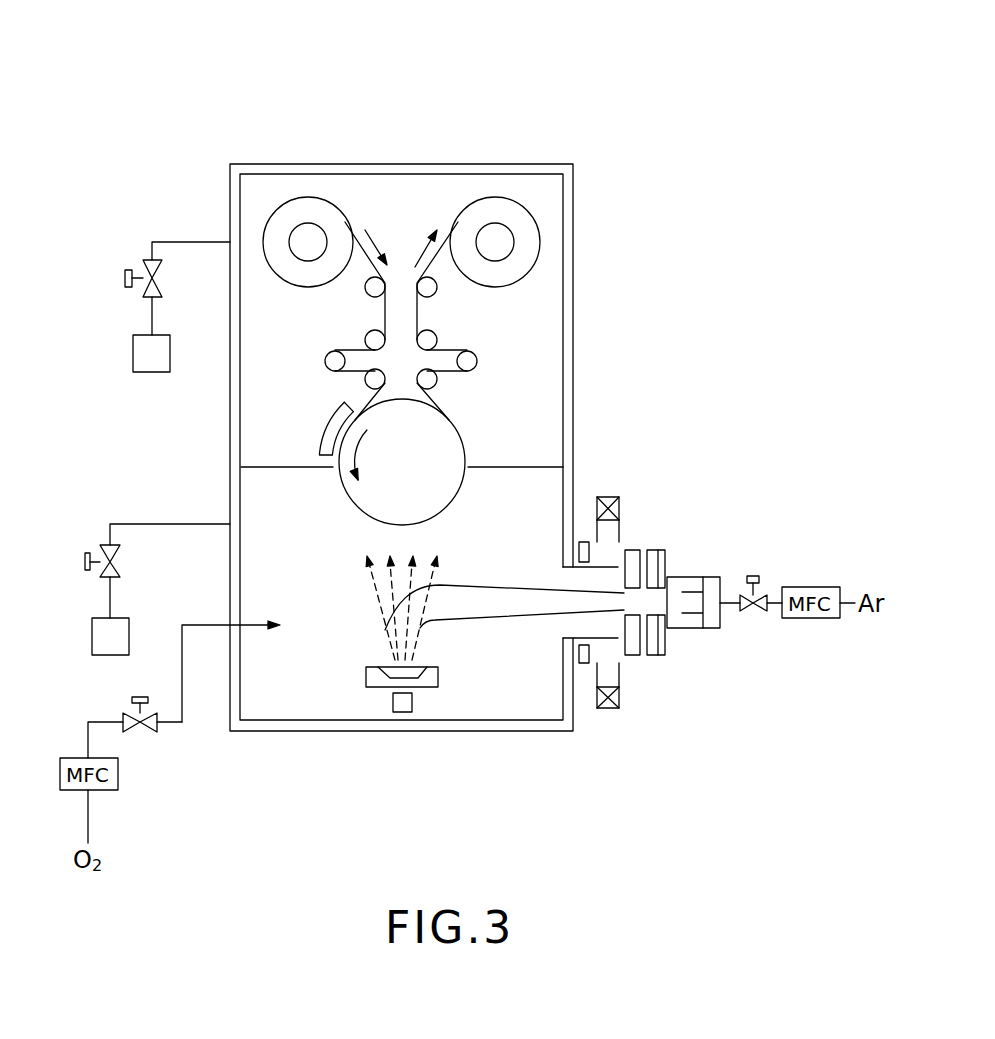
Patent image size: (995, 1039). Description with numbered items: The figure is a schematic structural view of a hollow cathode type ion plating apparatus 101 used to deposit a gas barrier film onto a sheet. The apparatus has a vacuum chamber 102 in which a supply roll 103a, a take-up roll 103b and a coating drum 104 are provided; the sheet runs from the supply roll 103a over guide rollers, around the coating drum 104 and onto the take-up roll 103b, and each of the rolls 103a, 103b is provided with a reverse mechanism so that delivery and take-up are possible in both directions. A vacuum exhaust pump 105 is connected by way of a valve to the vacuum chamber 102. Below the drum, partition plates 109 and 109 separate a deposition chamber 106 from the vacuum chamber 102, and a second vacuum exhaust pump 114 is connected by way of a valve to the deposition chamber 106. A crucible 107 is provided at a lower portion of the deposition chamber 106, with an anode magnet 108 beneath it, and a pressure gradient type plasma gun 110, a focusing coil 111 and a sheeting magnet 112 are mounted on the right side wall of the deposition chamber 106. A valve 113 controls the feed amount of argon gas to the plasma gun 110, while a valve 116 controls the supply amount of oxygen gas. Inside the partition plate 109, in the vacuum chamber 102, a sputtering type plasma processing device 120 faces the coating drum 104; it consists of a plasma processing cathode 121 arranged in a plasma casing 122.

The hollow cathode type ion plating apparatus 101 is at (487, 130).
The vacuum chamber 102 is at (543, 303).
The supply roll 103a is at (308, 242).
The take-up roll 103b is at (495, 242).
The coating drum 104 is at (438, 432).
The vacuum exhaust pump 105 is at (133, 355).
The deposition chamber 106 is at (547, 490).
The crucible 107 is at (438, 677).
The anode magnet 108 is at (402, 712).
The partition plate 109 is at (263, 467).
The pressure gradient type plasma gun 110 is at (689, 576).
The focusing coil 111 is at (620, 698).
The sheeting magnet 112 is at (585, 663).
The valve 113 is at (753, 615).
The vacuum exhaust pump 114 is at (129, 636).
The valve 116 is at (144, 735).
The plasma processing device 120 is at (224, 426).
The plasma processing cathode 121 is at (322, 428).
The plasma casing 122 is at (330, 447).